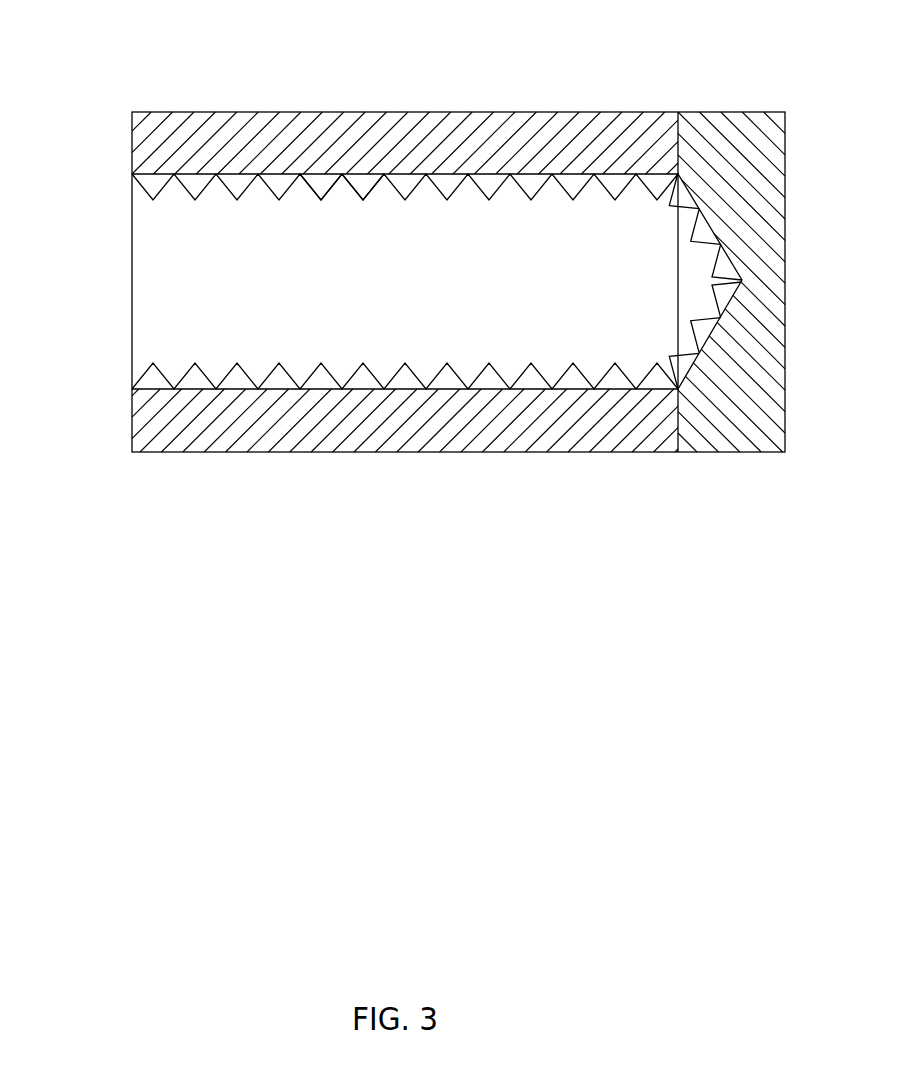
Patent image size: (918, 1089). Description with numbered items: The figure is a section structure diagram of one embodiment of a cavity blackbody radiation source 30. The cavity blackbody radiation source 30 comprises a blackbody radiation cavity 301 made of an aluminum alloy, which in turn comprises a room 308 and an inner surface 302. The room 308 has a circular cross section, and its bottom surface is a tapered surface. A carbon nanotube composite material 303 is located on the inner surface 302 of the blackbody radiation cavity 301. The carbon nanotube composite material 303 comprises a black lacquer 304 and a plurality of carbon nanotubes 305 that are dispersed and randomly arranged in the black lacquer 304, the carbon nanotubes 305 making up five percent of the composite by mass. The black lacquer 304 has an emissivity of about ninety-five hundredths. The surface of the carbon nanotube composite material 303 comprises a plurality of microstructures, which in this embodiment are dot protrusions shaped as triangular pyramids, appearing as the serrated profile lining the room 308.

The cavity blackbody radiation source 30 is at (447, 74).
The blackbody radiation cavity 301 is at (722, 130).
The inner surface 302 is at (156, 360).
The carbon nanotube composite material 303 is at (386, 264).
The black lacquer 304 is at (322, 201).
The carbon nanotubes 305 is at (365, 201).
The room 308 is at (149, 288).